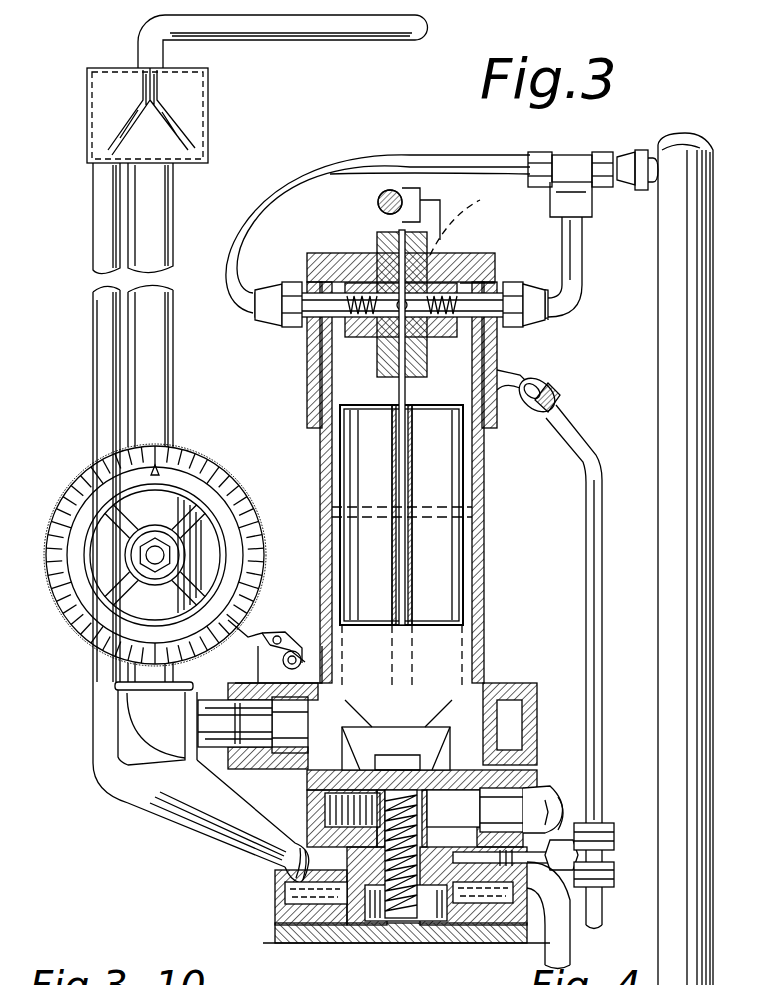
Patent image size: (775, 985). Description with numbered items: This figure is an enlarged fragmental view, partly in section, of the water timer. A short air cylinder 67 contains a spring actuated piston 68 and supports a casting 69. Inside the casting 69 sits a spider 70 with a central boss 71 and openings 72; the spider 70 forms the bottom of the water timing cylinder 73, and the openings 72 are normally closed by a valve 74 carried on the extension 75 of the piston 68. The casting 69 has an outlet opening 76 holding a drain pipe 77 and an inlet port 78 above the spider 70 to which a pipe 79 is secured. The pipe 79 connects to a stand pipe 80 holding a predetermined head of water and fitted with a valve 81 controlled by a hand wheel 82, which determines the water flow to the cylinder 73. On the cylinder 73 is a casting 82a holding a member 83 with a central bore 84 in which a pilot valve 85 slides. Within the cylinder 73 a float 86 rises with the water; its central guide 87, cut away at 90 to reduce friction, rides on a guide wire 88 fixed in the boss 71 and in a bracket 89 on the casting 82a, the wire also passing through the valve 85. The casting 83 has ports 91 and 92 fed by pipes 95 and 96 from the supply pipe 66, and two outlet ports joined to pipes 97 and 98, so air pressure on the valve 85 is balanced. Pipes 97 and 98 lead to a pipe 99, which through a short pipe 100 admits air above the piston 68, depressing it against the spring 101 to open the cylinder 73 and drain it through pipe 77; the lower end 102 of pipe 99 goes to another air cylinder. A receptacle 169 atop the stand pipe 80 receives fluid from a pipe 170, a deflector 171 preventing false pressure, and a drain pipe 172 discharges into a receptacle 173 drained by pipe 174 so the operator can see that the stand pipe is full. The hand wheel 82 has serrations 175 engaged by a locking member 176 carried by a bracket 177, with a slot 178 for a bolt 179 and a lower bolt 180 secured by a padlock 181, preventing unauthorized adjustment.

The supply pipe 66 is at (705, 565).
The air cylinder 67 is at (370, 930).
The spring actuated piston 68 is at (435, 925).
The casting 69 is at (310, 800).
The spider 70 is at (455, 750).
The central boss 71 is at (505, 685).
The openings 72 is at (500, 730).
The water timing container or cylinder 73 is at (484, 548).
The valve 74 is at (500, 790).
The extension 75 is at (428, 810).
The outlet opening 76 is at (545, 795).
The pipe 77 is at (565, 810).
The inlet port 78 is at (245, 735).
The pipe 79 is at (195, 770).
The stand pipe 80 is at (140, 370).
The valve 81 is at (140, 505).
The hand wheel 82 is at (192, 470).
The casting 82a is at (310, 375).
The member (casting) 83 is at (365, 290).
The central bore 84 is at (450, 250).
The pilot valve 85 is at (493, 266).
The float 86 is at (465, 483).
The central guide 87 is at (412, 435).
The guide wire 88 is at (412, 595).
The bracket 89 is at (430, 215).
The cut away portion 90 is at (412, 520).
The port 91 is at (350, 318).
The port 92 is at (500, 372).
The pipe 95 is at (330, 300).
The pipe 96 is at (492, 318).
The pipe 97 is at (545, 385).
The pipe 98 is at (500, 390).
The pipe 99 is at (590, 552).
The short pipe 100 is at (583, 888).
The spring 101 is at (402, 915).
The lower end of pipe 99 102 is at (602, 927).
The receptacle 169 is at (192, 115).
The pipe 170 is at (335, 30).
The deflector 171 is at (135, 125).
The drain pipe 172 is at (100, 231).
The receptacle 173 is at (290, 895).
The pipe 174 is at (560, 948).
The serrations 175 is at (233, 490).
The locking member 176 is at (262, 605).
The bracket 177 is at (258, 668).
The slot 178 is at (262, 628).
The bolt 179 is at (280, 636).
The bolt 180 is at (305, 665).
The padlock or fastening device 181 is at (300, 648).